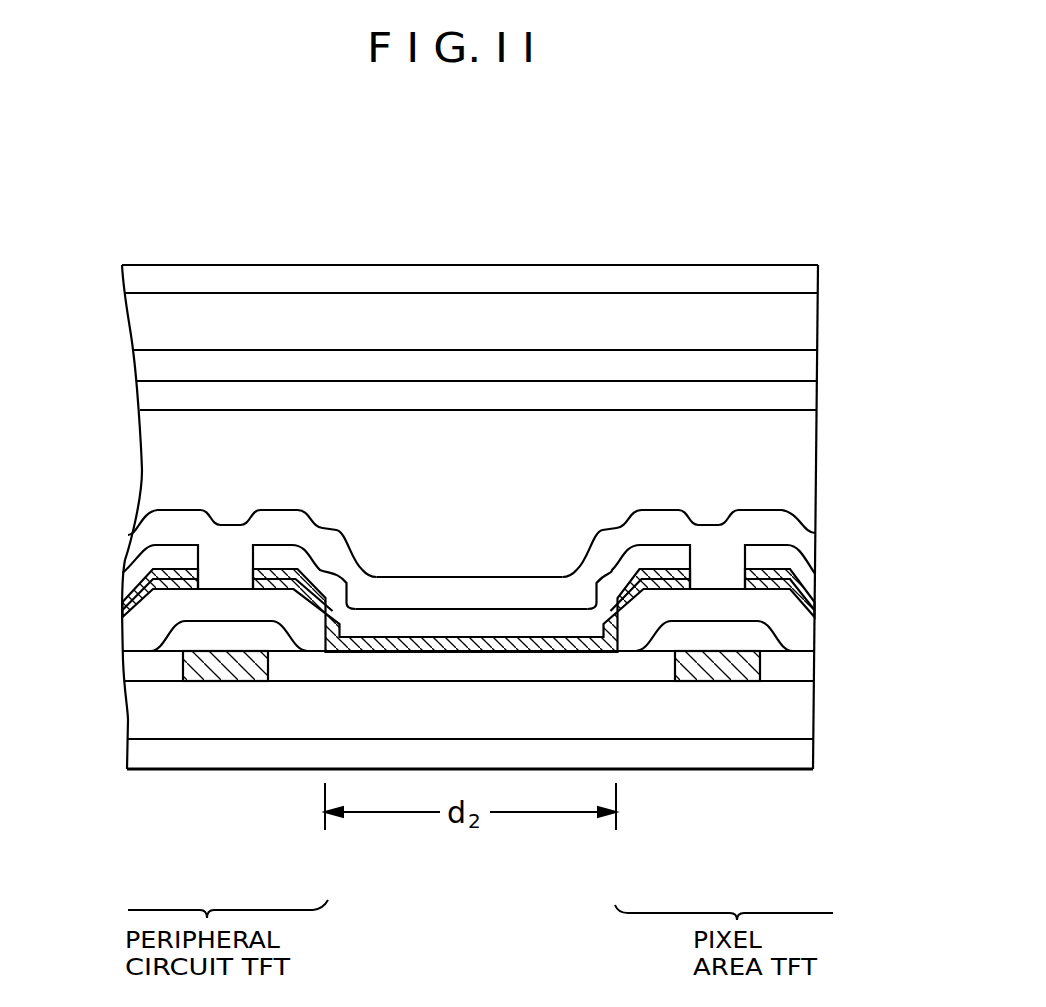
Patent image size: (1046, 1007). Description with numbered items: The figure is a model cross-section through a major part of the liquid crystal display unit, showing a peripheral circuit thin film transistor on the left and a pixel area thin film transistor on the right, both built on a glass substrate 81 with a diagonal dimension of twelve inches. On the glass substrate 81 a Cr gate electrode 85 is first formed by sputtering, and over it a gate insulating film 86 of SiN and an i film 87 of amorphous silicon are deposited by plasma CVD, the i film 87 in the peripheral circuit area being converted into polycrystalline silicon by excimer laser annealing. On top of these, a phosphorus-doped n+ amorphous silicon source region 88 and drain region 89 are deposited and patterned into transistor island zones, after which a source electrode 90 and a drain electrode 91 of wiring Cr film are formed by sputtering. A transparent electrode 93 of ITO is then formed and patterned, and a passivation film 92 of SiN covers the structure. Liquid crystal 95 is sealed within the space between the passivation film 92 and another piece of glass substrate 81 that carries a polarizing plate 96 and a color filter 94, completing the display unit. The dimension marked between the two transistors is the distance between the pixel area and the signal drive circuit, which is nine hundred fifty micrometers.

The glass substrate 81 is at (707, 313).
The gate electrode 85 is at (233, 682).
The gate insulating film 86 is at (133, 667).
The i film 87 is at (800, 638).
The source region 88 is at (123, 612).
The drain region 89 is at (310, 600).
The source electrode 90 is at (146, 566).
The drain electrode 91 is at (308, 585).
The passivation film 92 is at (187, 520).
The transparent electrode 93 is at (810, 393).
The color filter 94 is at (143, 365).
The liquid crystal 95 is at (813, 453).
The polarizing plate 96 is at (310, 276).